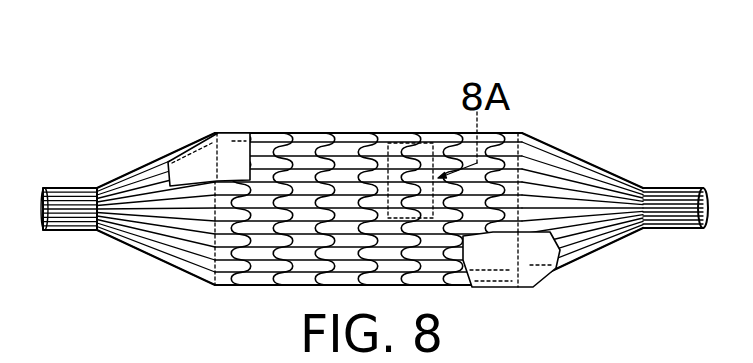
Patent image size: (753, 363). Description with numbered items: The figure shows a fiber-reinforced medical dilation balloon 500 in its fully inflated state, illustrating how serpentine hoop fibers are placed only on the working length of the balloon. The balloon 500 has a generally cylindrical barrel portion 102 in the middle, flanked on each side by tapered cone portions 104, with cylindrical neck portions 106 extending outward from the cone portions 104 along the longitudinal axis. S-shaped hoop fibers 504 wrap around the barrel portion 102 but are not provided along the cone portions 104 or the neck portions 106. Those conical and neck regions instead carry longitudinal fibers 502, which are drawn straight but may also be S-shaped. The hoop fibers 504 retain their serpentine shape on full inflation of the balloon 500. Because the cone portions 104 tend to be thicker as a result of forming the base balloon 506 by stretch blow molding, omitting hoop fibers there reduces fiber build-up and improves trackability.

The barrel portion 102 is at (530, 67).
The cone portion 104 is at (222, 67).
The neck portion 106 is at (102, 67).
The balloon 500 is at (580, 127).
The longitudinal fibers 502 is at (262, 131).
The S-shaped hoop fibers 504 is at (253, 286).
The base balloon 506 is at (196, 146).